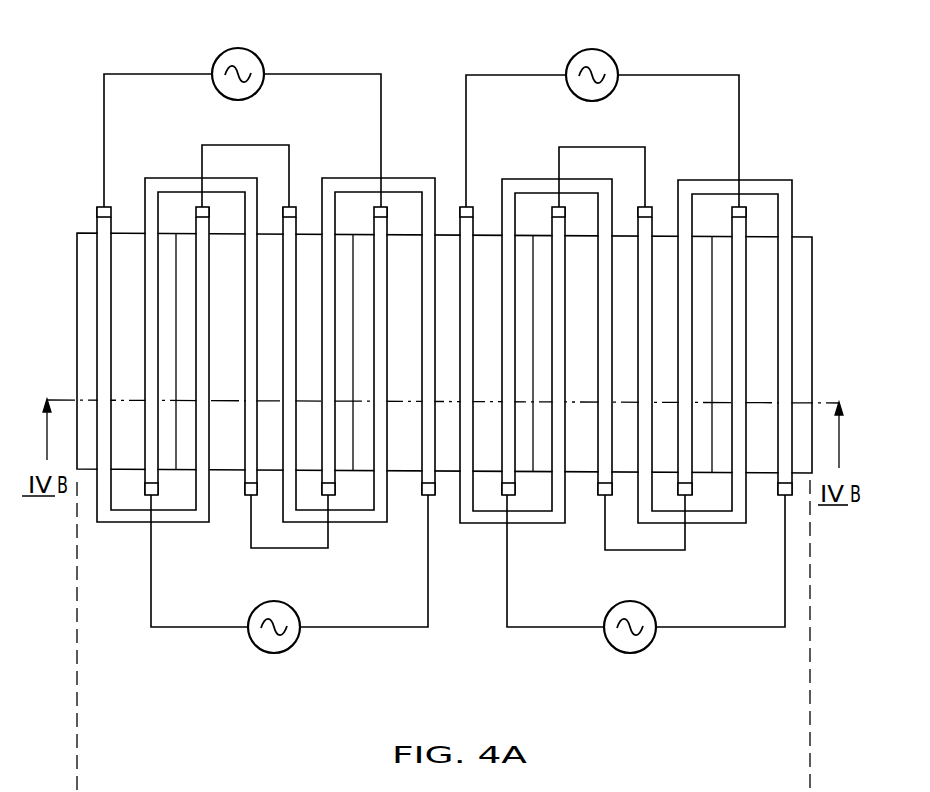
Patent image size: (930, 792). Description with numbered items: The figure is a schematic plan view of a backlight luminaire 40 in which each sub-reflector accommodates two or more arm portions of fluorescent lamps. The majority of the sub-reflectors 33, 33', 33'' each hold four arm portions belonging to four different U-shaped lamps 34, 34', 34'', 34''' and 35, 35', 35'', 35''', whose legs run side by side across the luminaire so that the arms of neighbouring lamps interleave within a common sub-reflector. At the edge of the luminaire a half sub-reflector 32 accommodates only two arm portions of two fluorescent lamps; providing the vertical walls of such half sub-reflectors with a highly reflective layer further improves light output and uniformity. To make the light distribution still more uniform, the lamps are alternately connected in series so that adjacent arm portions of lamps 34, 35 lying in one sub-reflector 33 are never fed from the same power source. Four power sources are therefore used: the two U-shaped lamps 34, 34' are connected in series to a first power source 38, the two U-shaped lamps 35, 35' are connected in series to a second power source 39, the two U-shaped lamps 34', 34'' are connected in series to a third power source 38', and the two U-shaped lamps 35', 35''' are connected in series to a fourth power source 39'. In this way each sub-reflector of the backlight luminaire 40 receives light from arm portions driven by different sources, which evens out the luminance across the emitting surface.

The half sub-reflector 32 is at (122, 276).
The sub-reflector 33 is at (130, 352).
The sub-reflector 33' is at (605, 384).
The sub-reflector 33'' is at (697, 354).
The U-shaped lamp 34 is at (153, 391).
The U-shaped lamp 34' is at (335, 390).
The U-shaped lamp 34'' is at (512, 391).
The U-shaped lamp 34''' is at (694, 391).
The U-shaped lamp 35 is at (201, 315).
The U-shaped lamp 35' is at (378, 315).
The U-shaped lamp 35'' is at (557, 315).
The U-shaped lamp 35''' is at (739, 317).
The first power source 38 is at (242, 116).
The third power source 38' is at (602, 116).
The second power source 39 is at (289, 590).
The fourth power source 39' is at (646, 590).
The backlight luminaire 40 is at (859, 790).